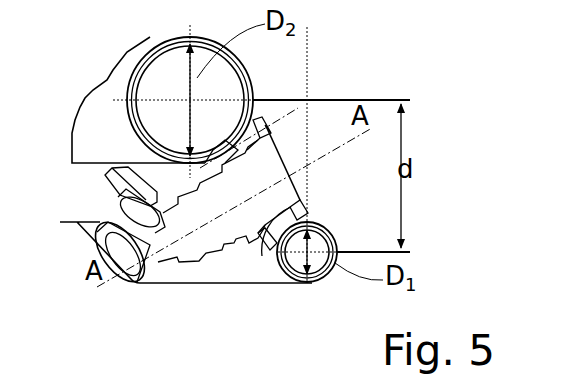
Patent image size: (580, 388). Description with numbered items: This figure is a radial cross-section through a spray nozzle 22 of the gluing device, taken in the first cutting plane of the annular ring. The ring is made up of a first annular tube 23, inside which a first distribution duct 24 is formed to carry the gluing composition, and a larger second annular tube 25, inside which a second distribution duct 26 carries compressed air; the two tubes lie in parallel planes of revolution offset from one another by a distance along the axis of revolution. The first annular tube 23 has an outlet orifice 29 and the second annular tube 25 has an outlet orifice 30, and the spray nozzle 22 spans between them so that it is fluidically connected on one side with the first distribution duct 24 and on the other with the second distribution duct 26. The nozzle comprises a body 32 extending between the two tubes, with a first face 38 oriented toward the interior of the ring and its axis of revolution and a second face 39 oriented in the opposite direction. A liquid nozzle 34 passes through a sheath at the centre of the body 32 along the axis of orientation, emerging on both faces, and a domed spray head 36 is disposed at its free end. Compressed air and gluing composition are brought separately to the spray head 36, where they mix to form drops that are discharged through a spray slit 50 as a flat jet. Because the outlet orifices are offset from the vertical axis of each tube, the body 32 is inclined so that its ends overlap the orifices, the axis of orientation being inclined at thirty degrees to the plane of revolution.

The spray nozzle 22 is at (212, 268).
The first annular tube 23 is at (337, 283).
The first distribution duct 24 is at (315, 248).
The second annular tube 25 is at (258, 90).
The second distribution duct 26 is at (213, 90).
The outlet orifice 29 is at (282, 252).
The outlet orifice 30 is at (246, 135).
The body 32 is at (308, 218).
The liquid nozzle 34 is at (188, 250).
The spray head 36 is at (118, 198).
The first face 38 is at (256, 250).
The second face 39 is at (308, 197).
The spray slit 50 is at (152, 262).